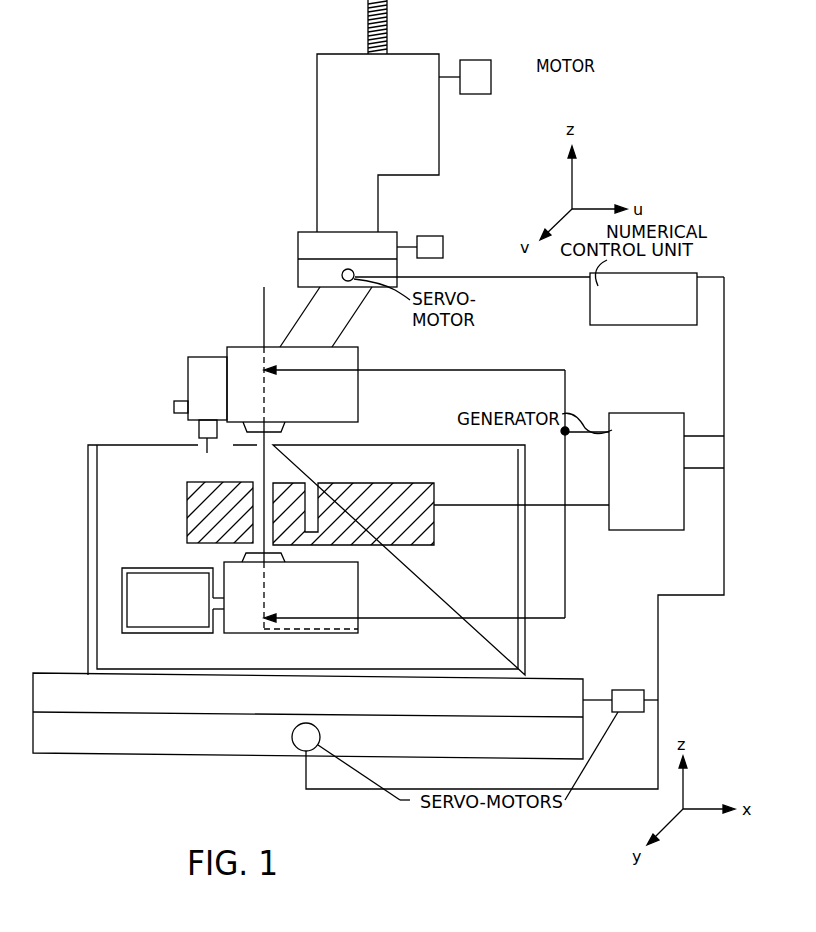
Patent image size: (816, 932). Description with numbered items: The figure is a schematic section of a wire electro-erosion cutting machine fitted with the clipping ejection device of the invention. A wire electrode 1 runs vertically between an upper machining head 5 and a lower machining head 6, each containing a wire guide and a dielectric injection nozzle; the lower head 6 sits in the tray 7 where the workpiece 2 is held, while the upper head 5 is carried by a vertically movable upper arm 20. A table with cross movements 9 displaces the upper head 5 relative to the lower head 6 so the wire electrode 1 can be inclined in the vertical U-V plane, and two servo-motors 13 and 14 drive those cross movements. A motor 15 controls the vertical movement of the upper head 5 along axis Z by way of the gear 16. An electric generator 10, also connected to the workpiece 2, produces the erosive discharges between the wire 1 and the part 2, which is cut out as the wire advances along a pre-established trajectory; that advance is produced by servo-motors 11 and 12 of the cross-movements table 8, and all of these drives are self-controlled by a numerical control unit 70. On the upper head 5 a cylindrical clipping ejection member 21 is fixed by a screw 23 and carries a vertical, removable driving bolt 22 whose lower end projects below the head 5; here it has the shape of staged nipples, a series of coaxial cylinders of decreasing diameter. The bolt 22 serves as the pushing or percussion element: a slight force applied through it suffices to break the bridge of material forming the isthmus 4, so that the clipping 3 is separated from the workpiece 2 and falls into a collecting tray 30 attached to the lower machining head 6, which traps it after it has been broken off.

The wire electrode 1 is at (264, 312).
The workpiece 2 is at (427, 500).
The clipping 3 is at (302, 496).
The isthmus 4 is at (310, 537).
The upper machining head 5 is at (345, 397).
The lower machining head 6 is at (345, 592).
The tray 7 is at (88, 608).
The cross-movements table 8 is at (134, 700).
The table with cross movements 9 is at (298, 277).
The electric generator 10 is at (645, 428).
The servo-motor 11 is at (306, 740).
The servo-motor 12 is at (634, 700).
The servo-motor 13 is at (344, 280).
The servo-motor 14 is at (413, 292).
The motor 15 is at (488, 72).
The gear 16 is at (368, 18).
The upper arm 20 is at (318, 138).
The cylindrical clipping ejection member 21 is at (190, 366).
The driving bolt 22 is at (200, 430).
The screw 23 is at (174, 405).
The collecting tray 30 is at (127, 584).
The numerical control unit 70 is at (656, 316).